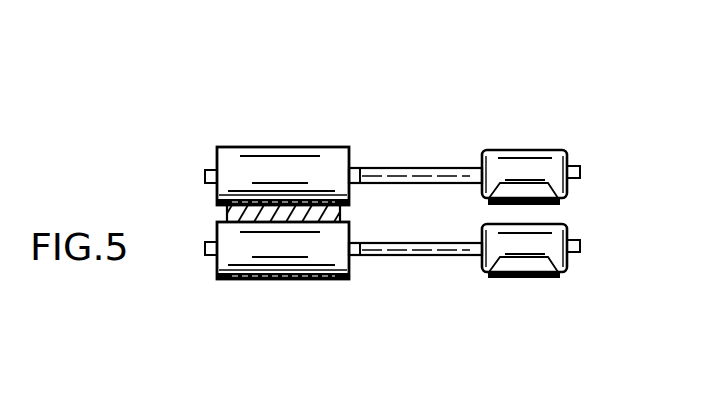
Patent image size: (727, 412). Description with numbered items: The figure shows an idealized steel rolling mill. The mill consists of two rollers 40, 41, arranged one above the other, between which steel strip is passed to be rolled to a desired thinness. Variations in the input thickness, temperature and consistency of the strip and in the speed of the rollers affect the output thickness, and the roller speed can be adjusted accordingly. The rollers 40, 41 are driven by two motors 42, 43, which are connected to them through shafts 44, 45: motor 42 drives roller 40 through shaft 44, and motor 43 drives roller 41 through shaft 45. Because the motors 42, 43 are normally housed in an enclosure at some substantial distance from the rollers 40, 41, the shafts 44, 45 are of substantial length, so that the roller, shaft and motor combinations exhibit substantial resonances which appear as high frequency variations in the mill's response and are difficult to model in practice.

The roller 40 is at (278, 156).
The roller 41 is at (263, 266).
The motor 42 is at (530, 158).
The motor 43 is at (541, 243).
The shaft 44 is at (417, 167).
The shaft 45 is at (398, 256).